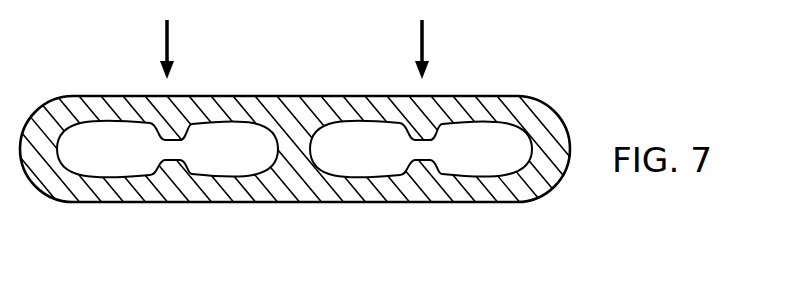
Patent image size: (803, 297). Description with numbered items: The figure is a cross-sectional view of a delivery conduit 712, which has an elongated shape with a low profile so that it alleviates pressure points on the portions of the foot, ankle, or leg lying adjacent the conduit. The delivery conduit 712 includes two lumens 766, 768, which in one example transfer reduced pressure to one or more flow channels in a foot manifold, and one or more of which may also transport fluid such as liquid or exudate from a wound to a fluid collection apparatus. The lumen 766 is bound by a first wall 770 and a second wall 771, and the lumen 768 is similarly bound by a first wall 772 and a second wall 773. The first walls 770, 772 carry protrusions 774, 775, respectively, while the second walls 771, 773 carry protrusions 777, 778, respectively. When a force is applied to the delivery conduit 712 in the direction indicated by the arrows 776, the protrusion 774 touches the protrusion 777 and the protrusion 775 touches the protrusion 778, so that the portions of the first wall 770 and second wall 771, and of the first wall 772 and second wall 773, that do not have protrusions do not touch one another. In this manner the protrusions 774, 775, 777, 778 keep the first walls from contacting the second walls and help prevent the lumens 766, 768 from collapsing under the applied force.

The delivery conduit 712 is at (513, 76).
The lumen 766 is at (100, 137).
The lumen 768 is at (352, 138).
The first wall 770 is at (228, 122).
The second wall 771 is at (251, 173).
The first wall 772 is at (478, 124).
The second wall 773 is at (505, 175).
The protrusion 774 is at (164, 133).
The protrusion 775 is at (422, 133).
The arrows 776 is at (164, 47).
The protrusion 777 is at (167, 163).
The protrusion 778 is at (412, 165).